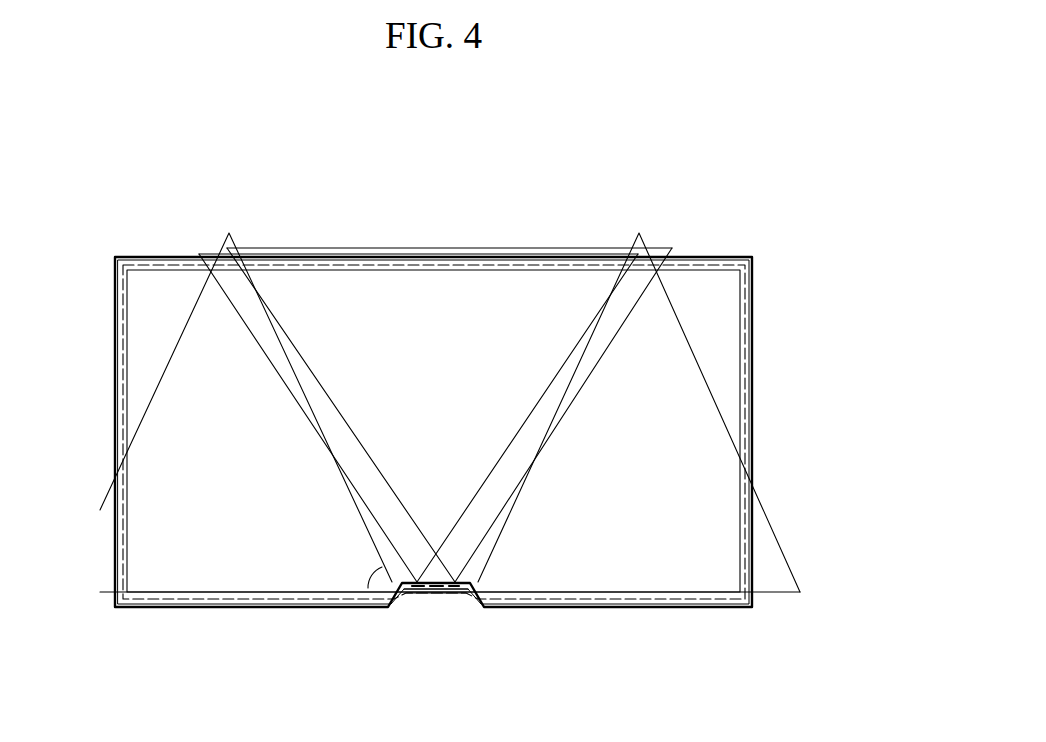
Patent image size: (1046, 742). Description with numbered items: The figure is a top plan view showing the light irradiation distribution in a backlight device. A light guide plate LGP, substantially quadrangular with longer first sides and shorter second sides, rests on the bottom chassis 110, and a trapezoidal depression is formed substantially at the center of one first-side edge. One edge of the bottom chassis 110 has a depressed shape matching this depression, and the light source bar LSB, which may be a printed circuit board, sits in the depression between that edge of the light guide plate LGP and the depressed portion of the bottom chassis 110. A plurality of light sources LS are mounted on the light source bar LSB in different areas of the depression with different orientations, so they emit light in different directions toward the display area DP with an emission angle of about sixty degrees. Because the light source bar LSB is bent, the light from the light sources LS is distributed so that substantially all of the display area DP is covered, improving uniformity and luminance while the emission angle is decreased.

The bottom chassis 110 is at (545, 607).
The display area DP is at (700, 262).
The light guide plate LGP is at (622, 600).
The light source bar LSB is at (412, 600).
The light sources LS is at (450, 600).